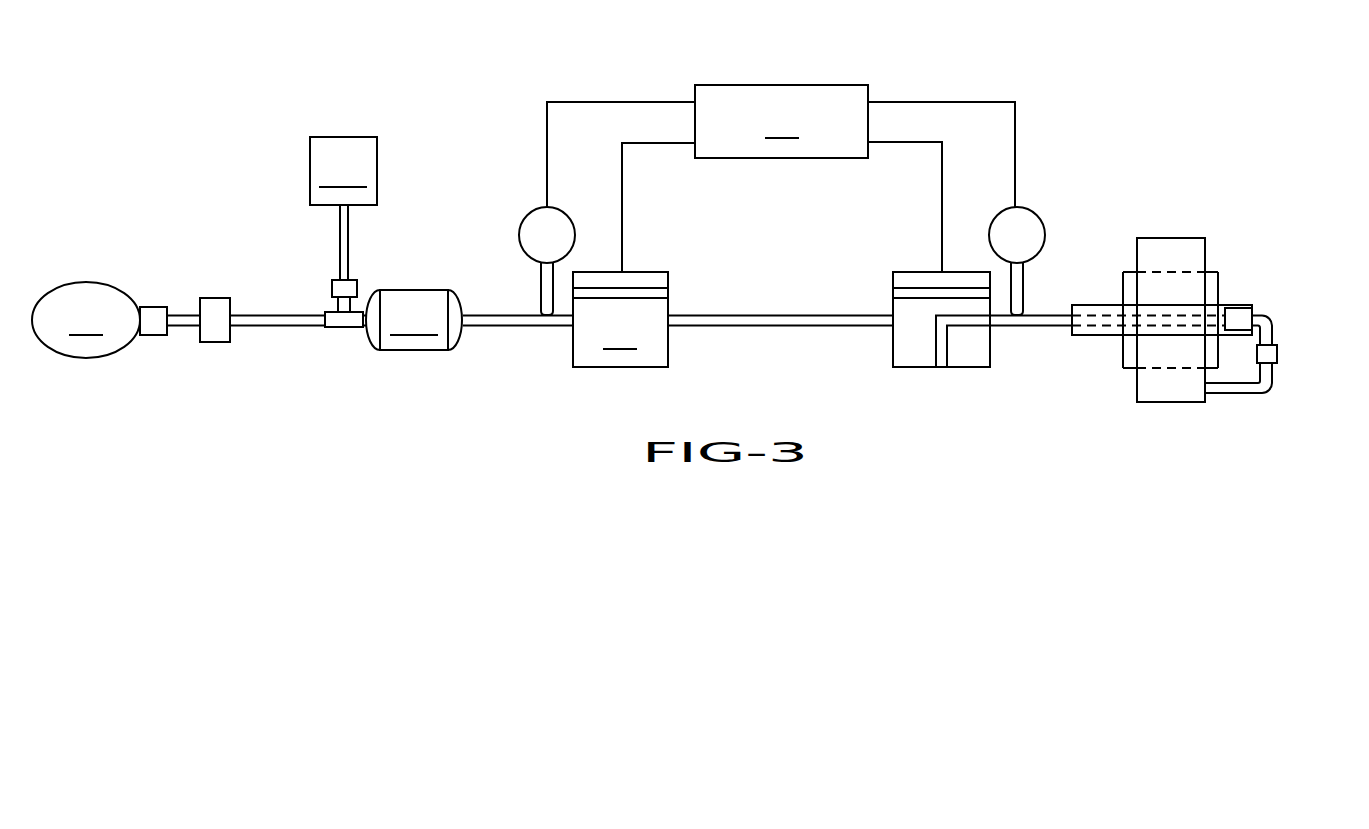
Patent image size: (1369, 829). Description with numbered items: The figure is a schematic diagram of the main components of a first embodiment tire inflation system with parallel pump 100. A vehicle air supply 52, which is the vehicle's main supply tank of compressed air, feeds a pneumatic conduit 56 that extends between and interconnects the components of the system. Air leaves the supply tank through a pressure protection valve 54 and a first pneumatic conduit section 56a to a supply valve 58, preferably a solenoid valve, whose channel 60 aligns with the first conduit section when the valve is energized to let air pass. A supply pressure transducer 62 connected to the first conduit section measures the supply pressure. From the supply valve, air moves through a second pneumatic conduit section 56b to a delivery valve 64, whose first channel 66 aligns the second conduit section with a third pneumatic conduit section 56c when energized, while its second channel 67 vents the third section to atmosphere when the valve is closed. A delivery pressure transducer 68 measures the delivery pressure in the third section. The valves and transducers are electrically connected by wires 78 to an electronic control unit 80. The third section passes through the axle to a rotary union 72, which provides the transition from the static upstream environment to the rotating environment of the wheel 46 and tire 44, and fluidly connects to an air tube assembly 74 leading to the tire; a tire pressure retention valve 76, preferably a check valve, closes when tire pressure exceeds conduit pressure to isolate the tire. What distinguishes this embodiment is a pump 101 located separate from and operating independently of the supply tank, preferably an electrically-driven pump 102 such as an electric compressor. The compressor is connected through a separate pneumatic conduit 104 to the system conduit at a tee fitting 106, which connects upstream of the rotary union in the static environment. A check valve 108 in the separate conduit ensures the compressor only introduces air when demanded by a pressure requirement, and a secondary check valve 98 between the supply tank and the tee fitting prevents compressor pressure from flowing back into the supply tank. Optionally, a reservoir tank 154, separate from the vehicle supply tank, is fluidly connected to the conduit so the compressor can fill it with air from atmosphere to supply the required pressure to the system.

The tire inflation system with parallel pump 100 is at (190, 162).
The pump 101 is at (331, 130).
The vehicle air supply 52 is at (86, 320).
The pressure protection valve 54 is at (155, 316).
The pneumatic conduit 56 is at (296, 336).
The first pneumatic conduit section 56a is at (518, 327).
The second pneumatic conduit section 56b is at (752, 327).
The third pneumatic conduit section 56c is at (1033, 327).
The secondary check valve 98 is at (215, 330).
The tee fitting 106 is at (344, 328).
The check valve 108 is at (332, 288).
The separate pneumatic conduit 104 is at (348, 248).
The electrically-driven pump 102 is at (343, 171).
The reservoir tank 154 is at (412, 320).
The supply pressure transducer 62 is at (527, 220).
The wires 78 is at (562, 100).
The electronic control unit 80 is at (781, 121).
The supply valve 58 is at (620, 319).
The channel 60 is at (645, 290).
The delivery valve 64 is at (907, 358).
The first channel 66 is at (907, 290).
The second channel 67 is at (958, 323).
The delivery pressure transducer 68 is at (1040, 214).
The tire 44 is at (1150, 392).
The wheel 46 is at (1212, 281).
The rotary union 72 is at (1232, 311).
The air tube assembly 74 is at (1282, 398).
The tire pressure retention valve 76 is at (1278, 352).